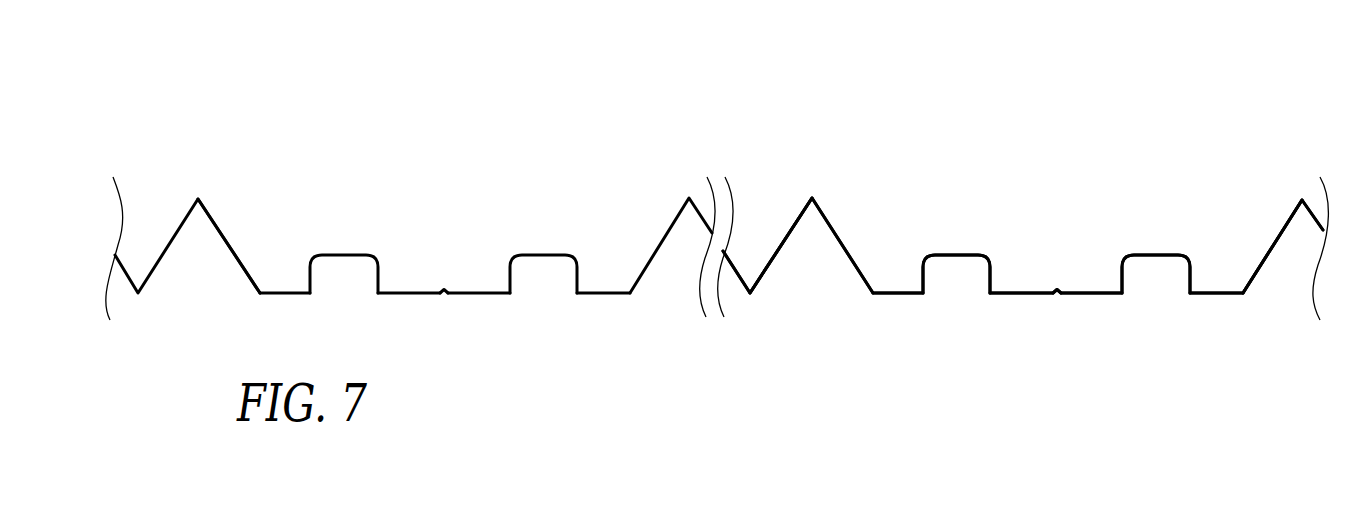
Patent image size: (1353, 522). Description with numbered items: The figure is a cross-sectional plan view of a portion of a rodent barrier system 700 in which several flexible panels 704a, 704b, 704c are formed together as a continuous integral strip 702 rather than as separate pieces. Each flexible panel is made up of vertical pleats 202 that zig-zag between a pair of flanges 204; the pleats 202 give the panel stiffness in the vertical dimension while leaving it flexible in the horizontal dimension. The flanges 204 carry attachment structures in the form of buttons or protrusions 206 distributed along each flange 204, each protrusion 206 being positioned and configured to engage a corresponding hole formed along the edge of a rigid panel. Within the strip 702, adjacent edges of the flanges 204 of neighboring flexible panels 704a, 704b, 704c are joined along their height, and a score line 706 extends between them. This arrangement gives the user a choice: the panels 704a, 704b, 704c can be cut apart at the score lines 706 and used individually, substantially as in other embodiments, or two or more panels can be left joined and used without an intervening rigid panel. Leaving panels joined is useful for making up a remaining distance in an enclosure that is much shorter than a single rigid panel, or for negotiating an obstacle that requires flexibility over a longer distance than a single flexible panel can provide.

The rodent barrier system 700 is at (528, 94).
The continuous integral strip 702 is at (901, 168).
The pleats 202 is at (183, 226).
The flanges 204 is at (403, 297).
The protrusions 206 is at (350, 252).
The flexible panel 704a is at (773, 272).
The flexible panel 704b is at (217, 222).
The flexible panel 704c is at (1272, 249).
The score line 706 is at (444, 289).